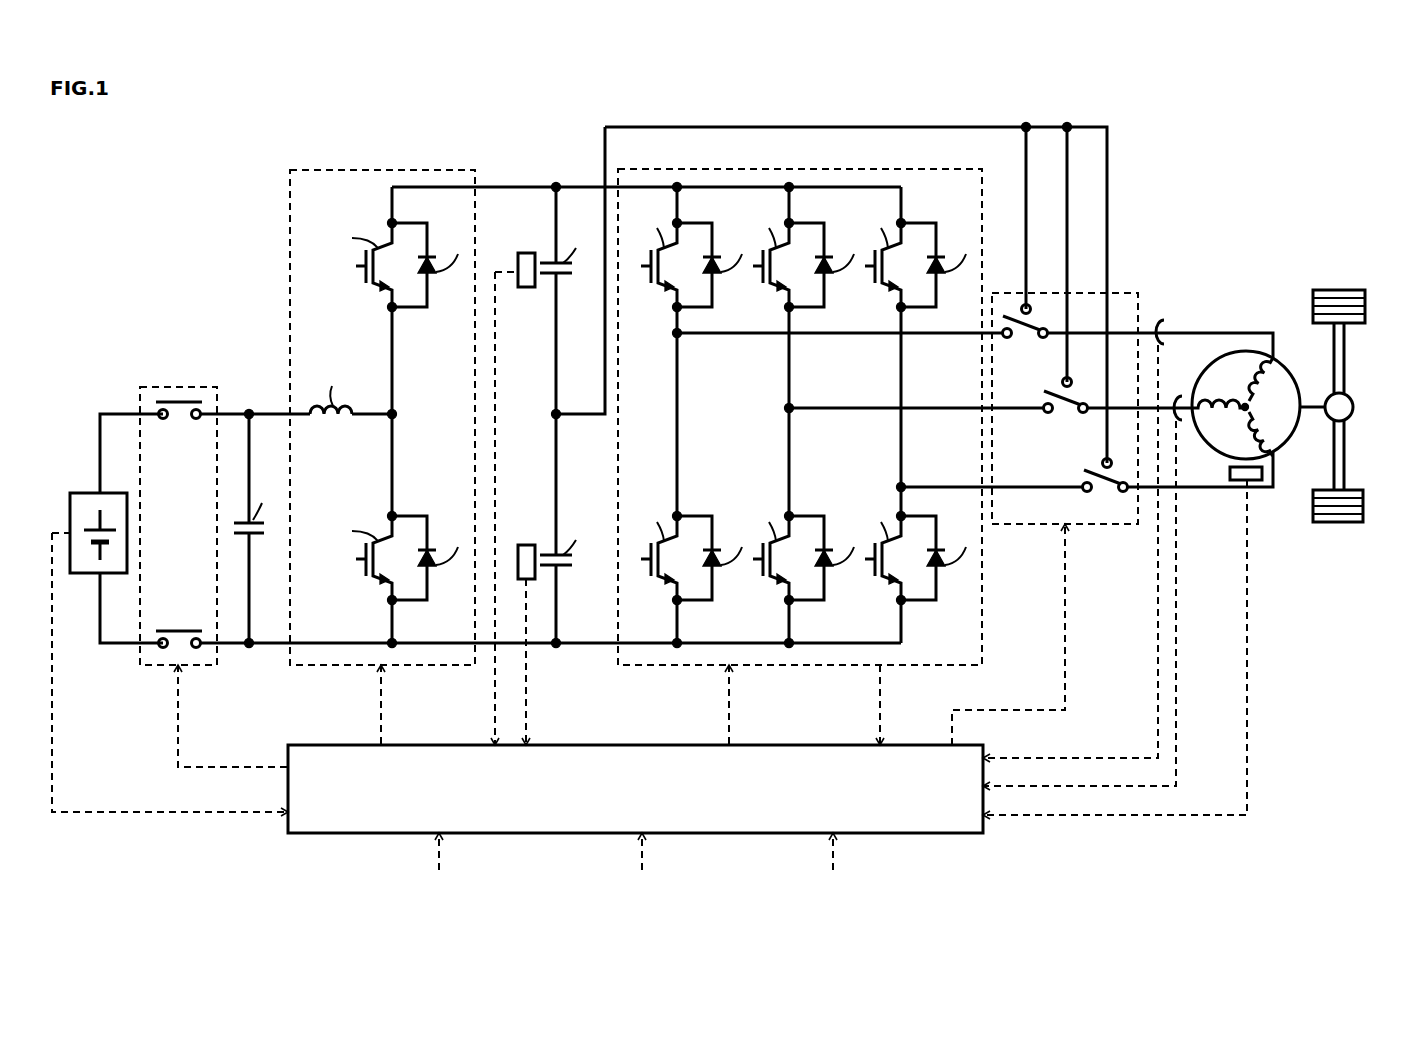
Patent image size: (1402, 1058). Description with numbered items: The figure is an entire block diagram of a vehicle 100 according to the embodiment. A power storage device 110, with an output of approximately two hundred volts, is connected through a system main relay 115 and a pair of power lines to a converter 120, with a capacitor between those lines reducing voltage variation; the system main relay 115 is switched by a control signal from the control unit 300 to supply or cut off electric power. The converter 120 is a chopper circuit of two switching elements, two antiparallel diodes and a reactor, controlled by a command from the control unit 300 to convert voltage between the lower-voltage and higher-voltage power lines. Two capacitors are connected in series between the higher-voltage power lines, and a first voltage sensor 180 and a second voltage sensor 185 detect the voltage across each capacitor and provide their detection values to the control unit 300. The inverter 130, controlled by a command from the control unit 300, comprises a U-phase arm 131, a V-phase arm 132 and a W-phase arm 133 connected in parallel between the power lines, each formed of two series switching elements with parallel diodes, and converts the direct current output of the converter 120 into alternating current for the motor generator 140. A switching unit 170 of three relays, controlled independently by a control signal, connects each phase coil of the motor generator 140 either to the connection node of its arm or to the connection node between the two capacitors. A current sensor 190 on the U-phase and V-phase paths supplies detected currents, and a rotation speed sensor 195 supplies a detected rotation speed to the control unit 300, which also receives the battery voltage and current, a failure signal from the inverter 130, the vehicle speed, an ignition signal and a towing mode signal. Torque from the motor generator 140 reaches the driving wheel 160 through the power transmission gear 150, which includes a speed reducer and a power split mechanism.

The vehicle 100 is at (1212, 92).
The power storage device 110 is at (87, 493).
The system main relay 115 is at (220, 387).
The converter 120 is at (382, 170).
The inverter 130 is at (806, 170).
The U-phase arm 131 is at (686, 415).
The V-phase arm 132 is at (773, 415).
The W-phase arm 133 is at (885, 415).
The motor generator 140 is at (1247, 351).
The power transmission gear 150 is at (1335, 419).
The driving wheel 160 is at (1338, 290).
The switching unit 170 is at (1133, 293).
The voltage sensor 180 is at (526, 253).
The voltage sensor 185 is at (526, 545).
The current sensor 190 is at (1178, 395).
The rotation speed sensor 195 is at (1255, 482).
The ECU 300 is at (930, 833).